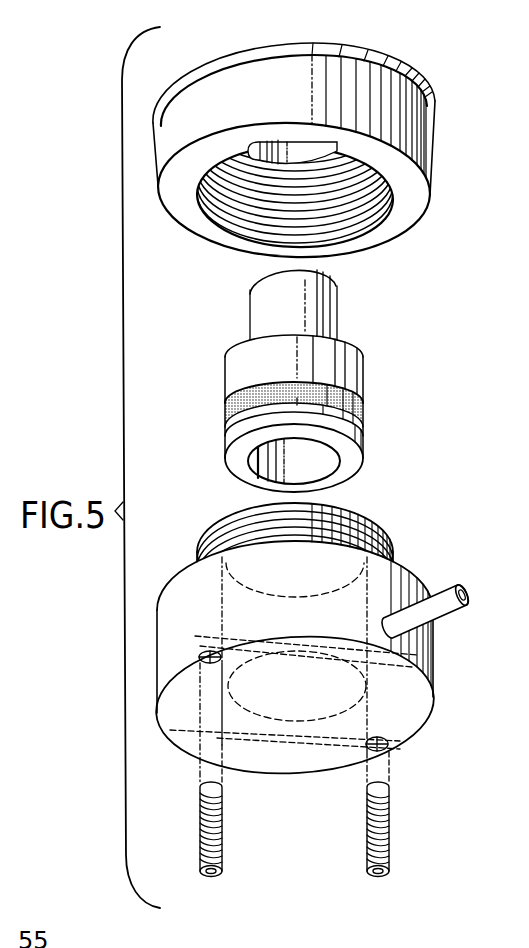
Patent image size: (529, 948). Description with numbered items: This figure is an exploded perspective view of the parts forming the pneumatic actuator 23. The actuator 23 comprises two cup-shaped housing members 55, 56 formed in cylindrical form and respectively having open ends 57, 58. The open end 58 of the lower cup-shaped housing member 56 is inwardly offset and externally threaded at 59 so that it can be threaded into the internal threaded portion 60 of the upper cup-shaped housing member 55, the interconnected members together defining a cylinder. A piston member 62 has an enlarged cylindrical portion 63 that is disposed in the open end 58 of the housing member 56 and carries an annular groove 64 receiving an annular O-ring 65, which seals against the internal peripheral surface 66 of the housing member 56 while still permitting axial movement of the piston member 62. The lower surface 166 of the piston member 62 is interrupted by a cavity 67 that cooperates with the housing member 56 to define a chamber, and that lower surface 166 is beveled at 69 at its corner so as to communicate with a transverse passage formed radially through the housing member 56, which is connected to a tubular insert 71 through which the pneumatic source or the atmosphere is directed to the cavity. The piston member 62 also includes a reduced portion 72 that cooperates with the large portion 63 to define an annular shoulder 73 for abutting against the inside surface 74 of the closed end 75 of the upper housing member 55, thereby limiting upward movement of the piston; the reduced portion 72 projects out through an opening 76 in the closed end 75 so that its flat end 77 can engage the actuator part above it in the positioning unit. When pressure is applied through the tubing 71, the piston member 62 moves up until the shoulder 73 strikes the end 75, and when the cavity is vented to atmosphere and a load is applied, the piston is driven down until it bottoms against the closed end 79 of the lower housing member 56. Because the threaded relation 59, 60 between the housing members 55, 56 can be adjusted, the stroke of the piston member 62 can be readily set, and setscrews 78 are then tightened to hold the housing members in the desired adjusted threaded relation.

The actuator 23 is at (317, 148).
The closed end 75 is at (343, 48).
The cup-shaped housing member 55 is at (430, 160).
The open end 57 is at (377, 237).
The inside surface 74 is at (345, 168).
The internal threaded portion 60 is at (230, 230).
The opening 76 is at (252, 152).
The piston member 62 is at (293, 382).
The reduced portion 72 is at (289, 300).
The flat end 77 is at (331, 283).
The annular shoulder 73 is at (241, 344).
The enlarged cylindrical portion 63 is at (362, 376).
The annular groove 64 is at (240, 391).
The O-ring 65 is at (228, 407).
The bevel 69 is at (362, 447).
The cavity 67 is at (253, 458).
The lower surface 166 is at (340, 475).
The cup-shaped housing member 56 is at (316, 690).
The open end 58 is at (372, 528).
The external threads 59 is at (218, 540).
The internal peripheral surface 66 is at (197, 572).
The tubular insert 71 is at (450, 593).
The closed end 79 is at (410, 723).
The setscrews 78 is at (222, 832).